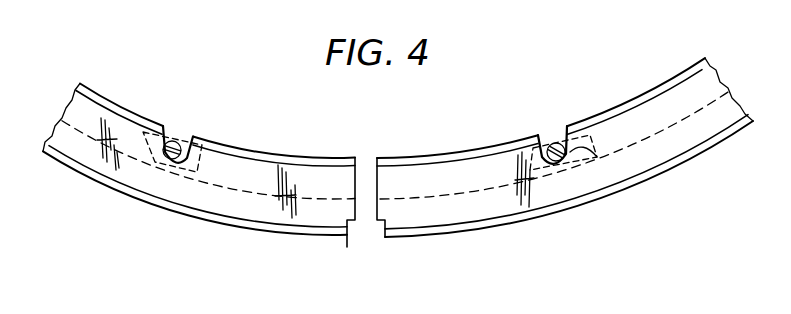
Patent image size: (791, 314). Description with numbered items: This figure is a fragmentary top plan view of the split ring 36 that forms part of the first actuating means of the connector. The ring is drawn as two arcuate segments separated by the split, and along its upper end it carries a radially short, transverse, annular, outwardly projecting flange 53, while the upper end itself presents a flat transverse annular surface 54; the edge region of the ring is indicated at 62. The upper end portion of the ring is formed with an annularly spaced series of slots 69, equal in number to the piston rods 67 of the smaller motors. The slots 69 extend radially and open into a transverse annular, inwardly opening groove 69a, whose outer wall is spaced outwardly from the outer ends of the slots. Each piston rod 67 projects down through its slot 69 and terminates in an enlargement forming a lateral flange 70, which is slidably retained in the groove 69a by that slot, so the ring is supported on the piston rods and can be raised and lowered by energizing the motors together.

The split ring 36 is at (385, 237).
The flange 53 is at (208, 213).
The flat transverse annular surface 54 is at (707, 138).
The top flange of rail segment 62 is at (98, 96).
The piston rods 67 is at (597, 152).
The slots 69 is at (565, 135).
The groove 69a is at (508, 186).
The lateral flange 70 is at (174, 140).